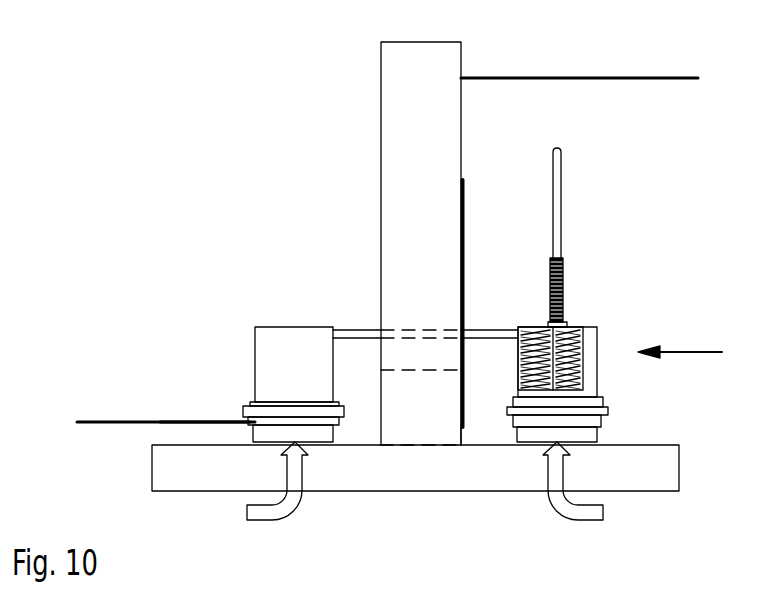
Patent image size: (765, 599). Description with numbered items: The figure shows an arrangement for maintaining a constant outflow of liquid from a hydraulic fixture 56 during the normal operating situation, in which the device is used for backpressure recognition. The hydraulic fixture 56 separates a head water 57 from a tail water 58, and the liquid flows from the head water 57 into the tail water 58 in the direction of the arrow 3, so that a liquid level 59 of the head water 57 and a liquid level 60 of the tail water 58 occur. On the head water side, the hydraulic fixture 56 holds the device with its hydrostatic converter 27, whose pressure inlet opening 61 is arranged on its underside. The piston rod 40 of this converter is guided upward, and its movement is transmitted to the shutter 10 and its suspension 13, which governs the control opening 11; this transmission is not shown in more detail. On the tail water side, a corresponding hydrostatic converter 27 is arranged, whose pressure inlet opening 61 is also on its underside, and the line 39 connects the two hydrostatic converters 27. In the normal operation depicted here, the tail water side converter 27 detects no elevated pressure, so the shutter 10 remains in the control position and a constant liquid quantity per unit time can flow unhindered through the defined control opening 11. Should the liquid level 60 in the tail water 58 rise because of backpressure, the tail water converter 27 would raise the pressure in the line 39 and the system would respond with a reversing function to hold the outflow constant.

The arrow 3 is at (694, 350).
The shutter 10 is at (463, 398).
The control opening 11 is at (410, 430).
The suspension 13 is at (464, 224).
The hydrostatic converter 27 is at (279, 336).
The line 39 is at (407, 322).
The piston rod 40 is at (563, 192).
The hydraulic fixture 56 is at (392, 125).
The head water 57 is at (652, 141).
The tail water 58 is at (205, 432).
The liquid level of the head water 59 is at (654, 77).
The liquid level of the tail water 60 is at (115, 420).
The pressure inlet opening 61 is at (262, 511).